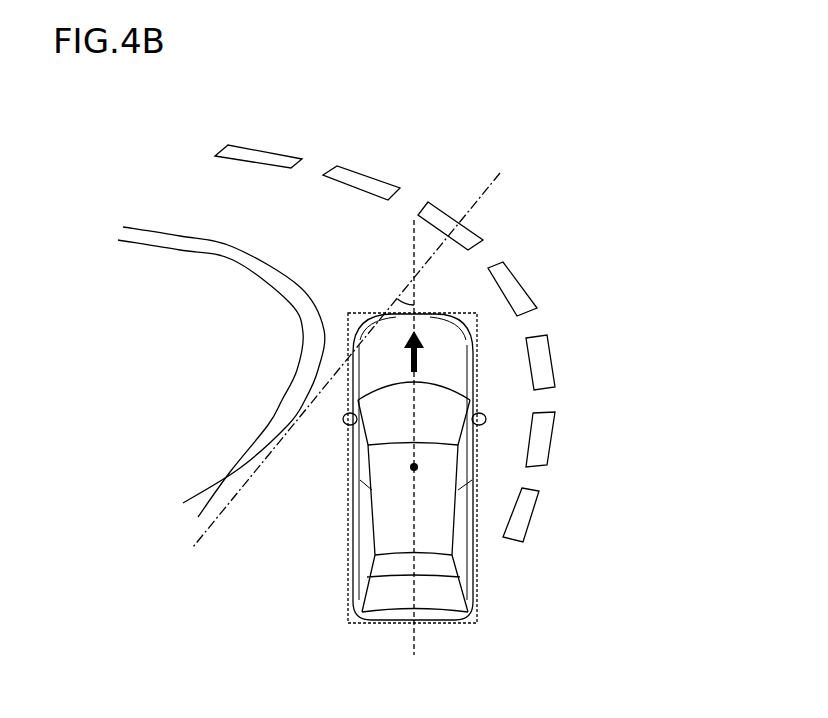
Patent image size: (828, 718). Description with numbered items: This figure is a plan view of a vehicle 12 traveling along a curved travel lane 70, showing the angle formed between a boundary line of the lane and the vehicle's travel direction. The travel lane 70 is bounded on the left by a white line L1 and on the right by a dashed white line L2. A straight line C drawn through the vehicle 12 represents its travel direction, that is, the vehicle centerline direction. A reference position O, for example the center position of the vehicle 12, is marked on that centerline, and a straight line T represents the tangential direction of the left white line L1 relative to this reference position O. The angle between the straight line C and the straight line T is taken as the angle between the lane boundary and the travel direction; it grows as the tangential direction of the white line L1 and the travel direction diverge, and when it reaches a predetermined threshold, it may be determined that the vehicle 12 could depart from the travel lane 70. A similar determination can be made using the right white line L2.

The travel lane 70 is at (267, 196).
The white line L2 is at (523, 283).
The white line L1 is at (303, 330).
The straight line T is at (488, 182).
The straight line C is at (415, 642).
The reference position O is at (419, 466).
The vehicle 12 is at (478, 502).